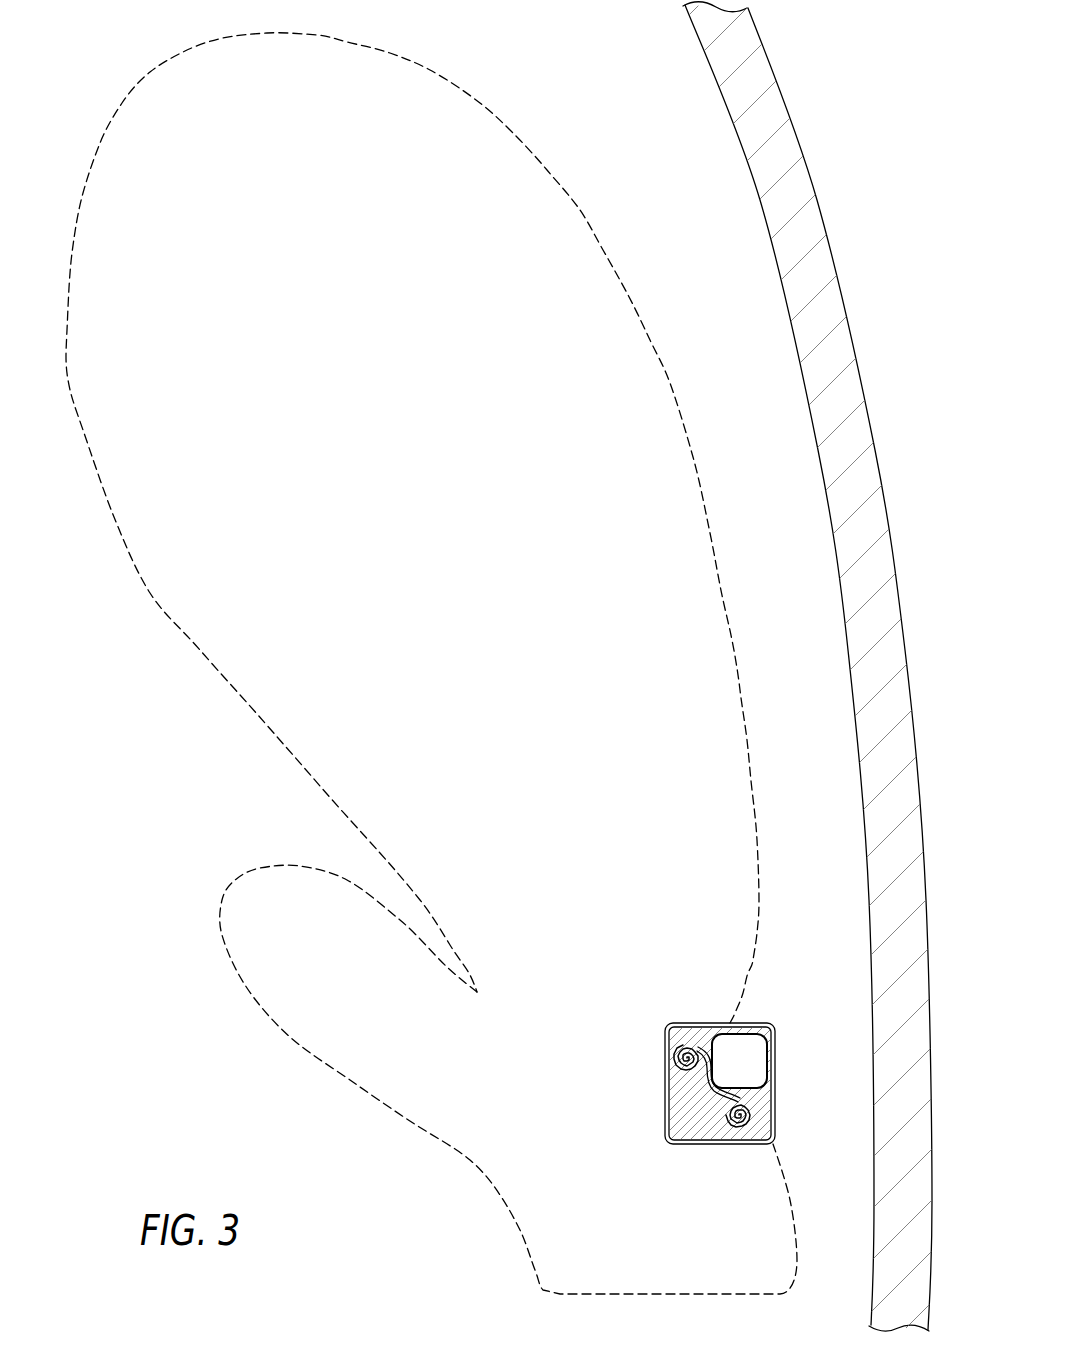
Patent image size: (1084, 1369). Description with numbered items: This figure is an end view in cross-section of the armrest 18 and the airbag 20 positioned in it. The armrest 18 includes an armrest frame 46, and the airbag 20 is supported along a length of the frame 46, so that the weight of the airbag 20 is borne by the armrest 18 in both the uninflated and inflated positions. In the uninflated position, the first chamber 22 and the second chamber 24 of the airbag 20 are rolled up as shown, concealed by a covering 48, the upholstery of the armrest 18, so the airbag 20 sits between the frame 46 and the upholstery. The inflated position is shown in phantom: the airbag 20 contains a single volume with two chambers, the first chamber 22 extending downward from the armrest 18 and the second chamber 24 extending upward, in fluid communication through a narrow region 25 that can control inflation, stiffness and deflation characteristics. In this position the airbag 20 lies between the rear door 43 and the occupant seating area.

The armrest 18 is at (756, 1021).
The airbag 20 is at (706, 1095).
The first chamber 22 is at (740, 1120).
The second chamber 24 is at (483, 105).
The narrow region 25 is at (586, 988).
The rear door 43 is at (813, 180).
The armrest frame 46 is at (750, 1055).
The covering 48 is at (672, 1054).